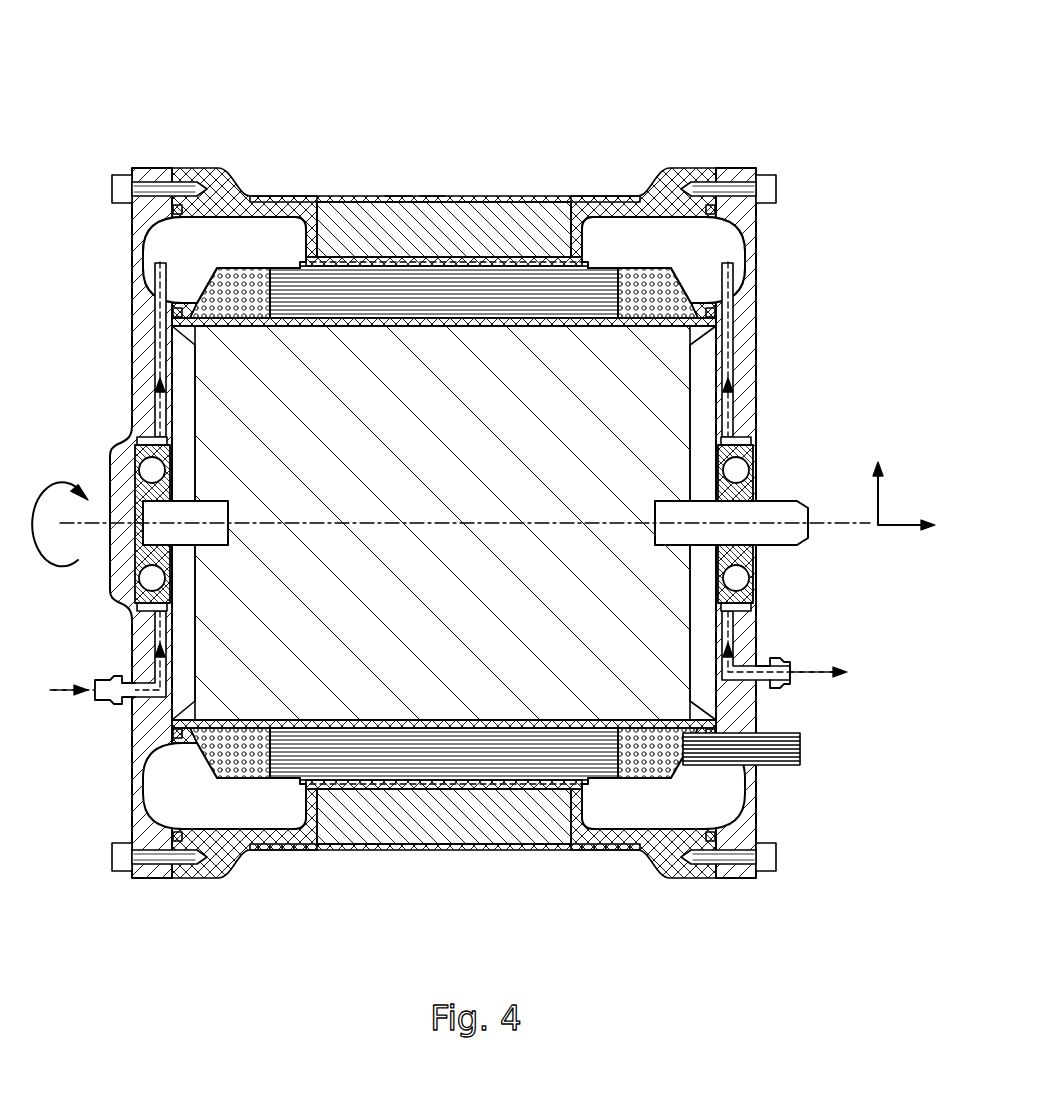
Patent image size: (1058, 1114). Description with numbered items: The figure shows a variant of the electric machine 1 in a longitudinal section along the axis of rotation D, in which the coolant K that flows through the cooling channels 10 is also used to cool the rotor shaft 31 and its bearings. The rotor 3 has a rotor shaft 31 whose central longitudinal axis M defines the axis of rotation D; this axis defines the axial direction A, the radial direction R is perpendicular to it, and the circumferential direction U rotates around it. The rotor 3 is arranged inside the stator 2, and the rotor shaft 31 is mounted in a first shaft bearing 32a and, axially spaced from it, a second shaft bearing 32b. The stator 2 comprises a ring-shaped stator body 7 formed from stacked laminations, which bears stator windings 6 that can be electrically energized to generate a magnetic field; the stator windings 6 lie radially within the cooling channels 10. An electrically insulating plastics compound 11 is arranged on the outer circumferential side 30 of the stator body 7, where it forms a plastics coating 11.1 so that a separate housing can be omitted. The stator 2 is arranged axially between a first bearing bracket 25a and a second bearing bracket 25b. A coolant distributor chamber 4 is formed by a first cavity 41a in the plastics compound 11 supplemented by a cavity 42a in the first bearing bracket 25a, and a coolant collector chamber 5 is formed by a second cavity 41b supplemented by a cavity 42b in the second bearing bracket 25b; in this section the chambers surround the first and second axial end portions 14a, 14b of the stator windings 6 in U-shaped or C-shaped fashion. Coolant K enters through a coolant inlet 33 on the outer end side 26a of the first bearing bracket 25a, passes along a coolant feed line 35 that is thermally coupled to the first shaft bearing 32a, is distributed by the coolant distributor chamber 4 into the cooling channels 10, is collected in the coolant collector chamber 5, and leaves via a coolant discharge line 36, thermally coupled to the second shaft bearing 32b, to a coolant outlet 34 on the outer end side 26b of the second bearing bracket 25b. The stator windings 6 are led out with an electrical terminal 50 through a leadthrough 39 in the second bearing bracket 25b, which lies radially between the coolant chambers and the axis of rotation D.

The electric machine 1 is at (477, 446).
The stator 2 is at (440, 497).
The rotor 3 is at (422, 484).
The coolant distributor chamber 4 is at (197, 252).
The coolant collector chamber 5 is at (677, 249).
The stator windings 6 is at (586, 318).
The stator body 7 is at (432, 196).
The cooling channels 10 is at (340, 240).
The plastics compound 11 is at (444, 487).
The plastics coating 11.1 is at (482, 196).
The first axial end portion 14a is at (200, 290).
The second axial end portion 14b is at (690, 292).
The first bearing bracket 25a is at (132, 360).
The second bearing bracket 25b is at (756, 360).
The outer end side 26a is at (135, 400).
The outer end side 26b is at (755, 400).
The outer circumferential side 30 is at (398, 198).
The rotor shaft 31 is at (774, 540).
The first shaft bearing 32a is at (138, 455).
The second shaft bearing 32b is at (753, 455).
The coolant inlet 33 is at (120, 704).
The coolant outlet 34 is at (792, 682).
The coolant feed line 35 is at (158, 325).
The coolant discharge line 36 is at (730, 325).
The leadthrough 39 is at (782, 762).
The first cavity 41a is at (240, 235).
The second cavity 41b is at (655, 233).
The cavity 42a is at (160, 250).
The cavity 42b is at (735, 258).
The electrical terminal 50 is at (779, 771).
The circumferential direction U is at (70, 565).
The radial direction R is at (904, 520).
The axial direction A is at (878, 488).
The central longitudinal axis M is at (465, 573).
The axis of rotation D is at (826, 545).
The coolant K is at (850, 680).